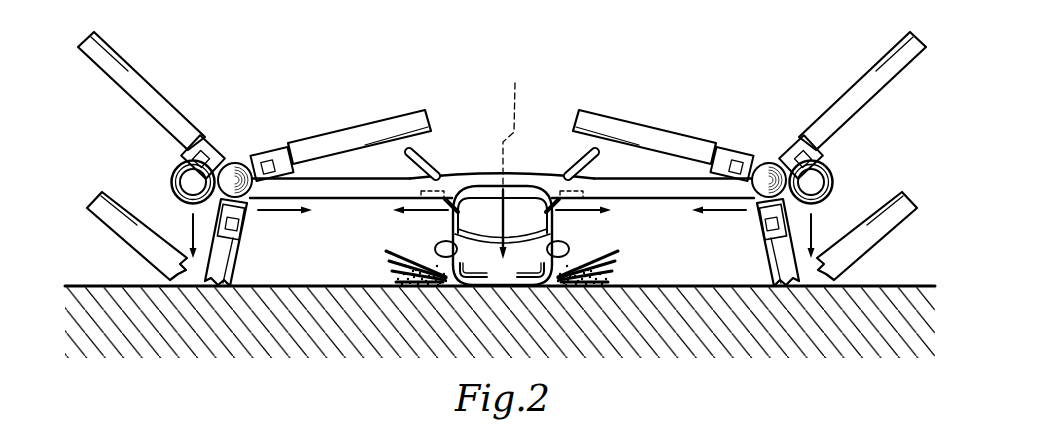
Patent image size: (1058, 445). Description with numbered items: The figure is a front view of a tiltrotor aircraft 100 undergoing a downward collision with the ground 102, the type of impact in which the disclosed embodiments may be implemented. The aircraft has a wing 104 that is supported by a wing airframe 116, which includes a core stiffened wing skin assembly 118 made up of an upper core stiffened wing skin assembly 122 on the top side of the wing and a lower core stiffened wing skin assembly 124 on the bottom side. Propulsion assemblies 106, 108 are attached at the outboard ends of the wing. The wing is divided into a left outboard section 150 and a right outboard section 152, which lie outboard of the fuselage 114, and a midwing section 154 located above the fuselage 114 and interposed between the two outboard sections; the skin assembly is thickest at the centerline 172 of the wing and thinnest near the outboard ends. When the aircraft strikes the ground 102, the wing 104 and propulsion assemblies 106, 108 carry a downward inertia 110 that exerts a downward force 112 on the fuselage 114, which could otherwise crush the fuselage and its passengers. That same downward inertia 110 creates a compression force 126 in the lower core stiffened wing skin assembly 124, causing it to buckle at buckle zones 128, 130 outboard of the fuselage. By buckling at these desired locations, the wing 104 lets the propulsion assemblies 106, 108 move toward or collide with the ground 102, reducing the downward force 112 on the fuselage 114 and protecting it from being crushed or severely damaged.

The tiltrotor aircraft 100 is at (593, 84).
The ground 102 is at (920, 285).
The wing 104 is at (338, 166).
The wing airframe 116 is at (502, 156).
The propulsion assembly 106 is at (832, 172).
The propulsion assembly 108 is at (172, 172).
The downward inertia 110 is at (190, 231).
The downward force 112 is at (553, 233).
The fuselage 114 is at (453, 237).
The core stiffened wing skin assembly 118 is at (675, 166).
The upper core stiffened wing skin assembly 122 is at (302, 176).
The lower core stiffened wing skin assembly 124 is at (643, 200).
The compression force 126 is at (275, 213).
The buckle zone 128 is at (564, 181).
The buckle zone 130 is at (440, 181).
The left outboard section 150 is at (633, 166).
The right outboard section 152 is at (368, 166).
The midwing section 154 is at (478, 165).
The centerline 172 is at (513, 159).